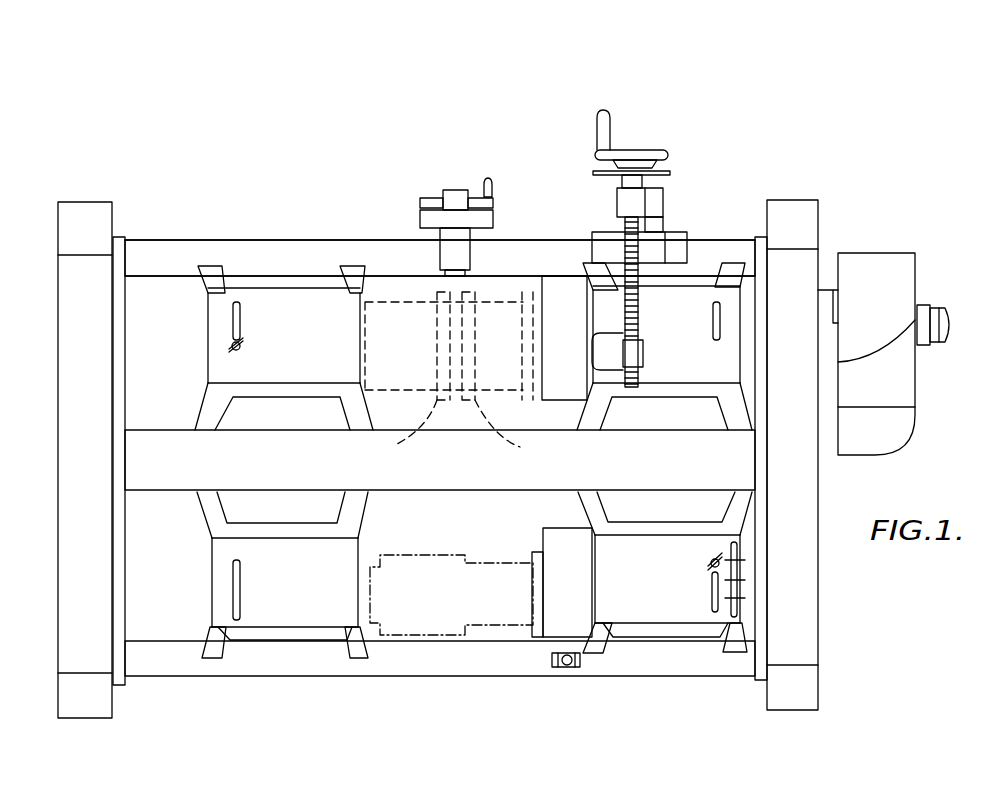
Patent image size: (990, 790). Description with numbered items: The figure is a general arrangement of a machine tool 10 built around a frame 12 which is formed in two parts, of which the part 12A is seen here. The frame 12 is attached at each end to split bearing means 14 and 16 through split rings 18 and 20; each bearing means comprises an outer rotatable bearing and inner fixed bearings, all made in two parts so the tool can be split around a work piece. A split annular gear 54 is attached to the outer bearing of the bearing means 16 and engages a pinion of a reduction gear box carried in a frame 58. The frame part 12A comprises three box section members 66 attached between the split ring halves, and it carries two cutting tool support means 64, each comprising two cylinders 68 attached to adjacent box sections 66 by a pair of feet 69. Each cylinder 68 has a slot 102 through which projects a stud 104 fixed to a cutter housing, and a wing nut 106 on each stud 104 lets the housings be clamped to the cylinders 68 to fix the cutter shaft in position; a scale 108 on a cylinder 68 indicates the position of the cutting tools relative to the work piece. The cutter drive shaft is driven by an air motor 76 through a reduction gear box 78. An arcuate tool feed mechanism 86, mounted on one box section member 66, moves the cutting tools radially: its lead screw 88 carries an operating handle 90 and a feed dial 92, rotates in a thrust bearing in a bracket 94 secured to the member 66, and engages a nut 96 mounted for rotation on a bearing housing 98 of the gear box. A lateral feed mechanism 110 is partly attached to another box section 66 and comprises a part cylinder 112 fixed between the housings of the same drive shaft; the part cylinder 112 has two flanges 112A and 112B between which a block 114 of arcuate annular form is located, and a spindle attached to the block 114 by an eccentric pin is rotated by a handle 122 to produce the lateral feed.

The machine tool 10 is at (408, 100).
The frame 12 is at (284, 222).
The frame part 12A is at (323, 240).
The split bearing means 14 is at (94, 182).
The split bearing means 16 is at (805, 185).
The split ring 18 is at (119, 240).
The split ring 20 is at (758, 237).
The split annular gear 54 is at (848, 630).
The frame 58 is at (937, 336).
The cutting tool support means 64 is at (207, 255).
The box section member 66 is at (385, 245).
The cylinder 68 is at (265, 300).
The foot 69 is at (202, 284).
The air motor 76 is at (428, 555).
The reduction gear box 78 is at (557, 530).
The arcuate tool feed mechanism 86 is at (660, 138).
The lead screw 88 is at (641, 320).
The operating handle 90 is at (668, 160).
The feed dial 92 is at (672, 175).
The bracket 94 is at (664, 225).
The nut 96 is at (647, 352).
The bearing housing 98 is at (602, 332).
The slot 102 is at (243, 330).
The stud 104 is at (245, 350).
The wing nut 106 is at (232, 347).
The scale 108 is at (738, 576).
The lateral feed mechanism 110 is at (468, 185).
The part cylinder 112 is at (493, 300).
The flange 112A is at (391, 432).
The flange 112B is at (529, 431).
The block 114 is at (432, 305).
The handle 122 is at (490, 178).